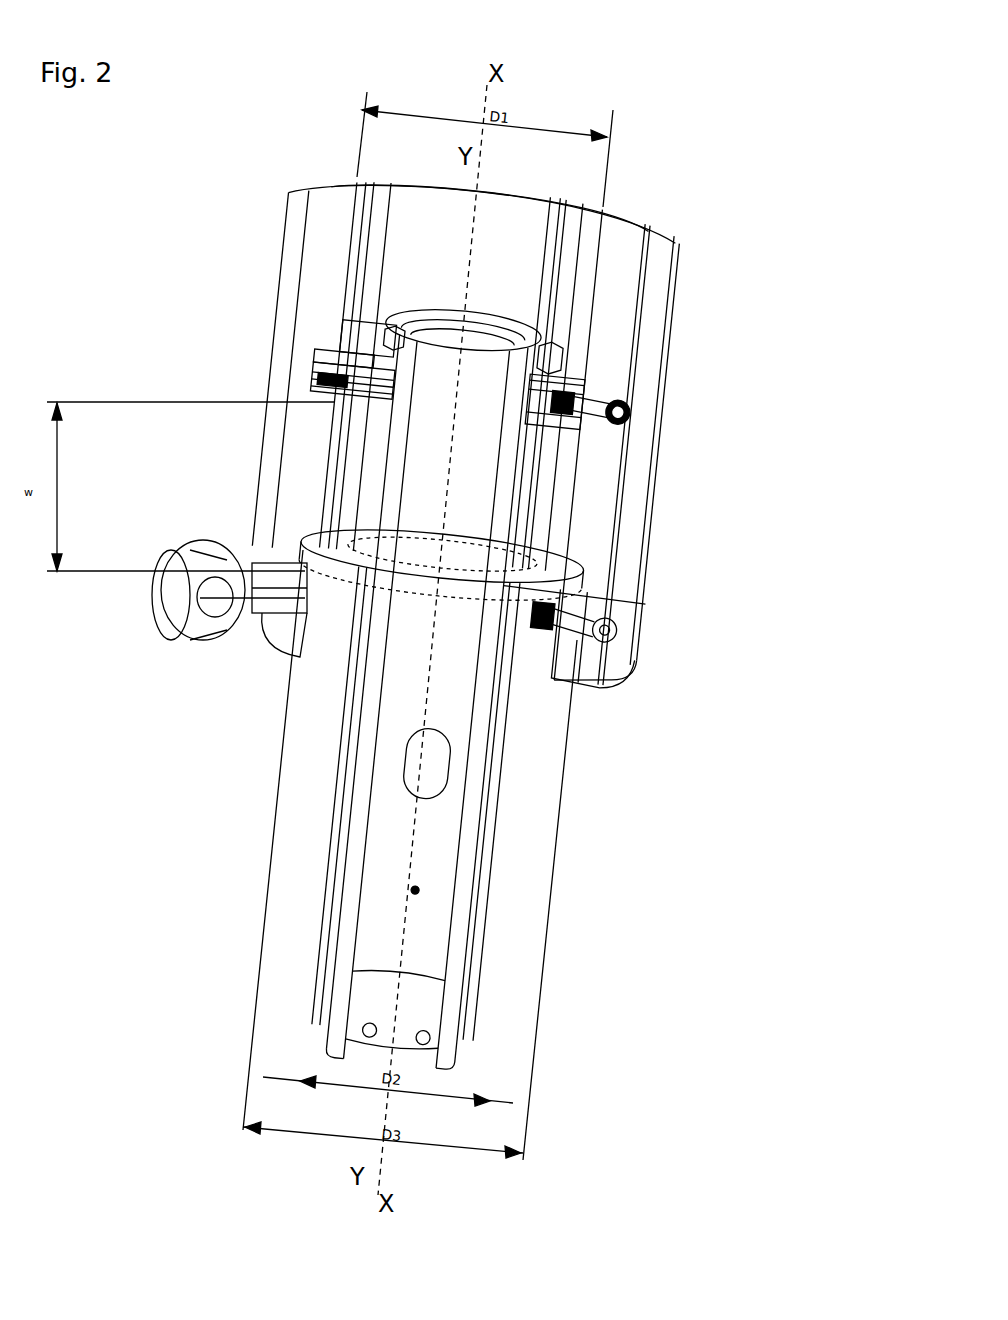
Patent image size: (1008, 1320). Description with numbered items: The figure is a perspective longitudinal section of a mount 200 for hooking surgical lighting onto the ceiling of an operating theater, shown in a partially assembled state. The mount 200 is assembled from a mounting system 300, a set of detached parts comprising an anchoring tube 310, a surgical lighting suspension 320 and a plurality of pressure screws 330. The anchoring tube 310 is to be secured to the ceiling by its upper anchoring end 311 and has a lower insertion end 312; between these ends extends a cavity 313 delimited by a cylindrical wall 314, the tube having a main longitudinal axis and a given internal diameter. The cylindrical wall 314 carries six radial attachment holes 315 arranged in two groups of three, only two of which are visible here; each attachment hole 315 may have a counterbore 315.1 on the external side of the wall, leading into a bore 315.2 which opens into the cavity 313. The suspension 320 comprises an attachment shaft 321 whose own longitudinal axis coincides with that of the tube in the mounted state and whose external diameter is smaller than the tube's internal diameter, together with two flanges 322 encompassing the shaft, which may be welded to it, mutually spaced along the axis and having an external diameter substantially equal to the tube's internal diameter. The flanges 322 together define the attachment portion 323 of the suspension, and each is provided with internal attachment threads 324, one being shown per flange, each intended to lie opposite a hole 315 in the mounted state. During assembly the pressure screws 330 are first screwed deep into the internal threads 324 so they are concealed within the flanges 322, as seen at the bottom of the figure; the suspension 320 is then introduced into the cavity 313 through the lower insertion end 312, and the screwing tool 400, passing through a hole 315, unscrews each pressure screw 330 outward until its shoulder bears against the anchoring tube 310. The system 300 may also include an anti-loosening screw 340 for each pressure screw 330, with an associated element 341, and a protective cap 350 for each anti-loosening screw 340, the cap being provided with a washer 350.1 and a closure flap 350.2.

The mount 200 is at (134, 846).
The mounting system 300 is at (658, 722).
The anchoring tube 310 is at (618, 292).
The upper anchoring end 311 is at (664, 70).
The lower insertion end 312 is at (402, 855).
The cavity 313 is at (348, 470).
The cylindrical wall 314 is at (325, 228).
The attachment hole 315 is at (286, 371).
The counterbore 315.1 is at (262, 630).
The bore 315.2 is at (372, 382).
The surgical lighting suspension 320 is at (582, 357).
The attachment shaft 321 is at (455, 905).
The flange 322 is at (583, 585).
The attachment portion 323 is at (562, 492).
The internal attachment thread 324 is at (574, 393).
The pressure screw 330 is at (345, 365).
The anti-loosening screw 340 is at (333, 367).
The clamp screw 341 is at (292, 388).
The protective cap 350 is at (613, 633).
The washer 350.1 is at (634, 350).
The closure flap 350.2 is at (643, 427).
The screwing tool 400 is at (180, 550).